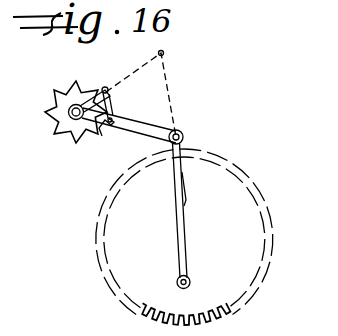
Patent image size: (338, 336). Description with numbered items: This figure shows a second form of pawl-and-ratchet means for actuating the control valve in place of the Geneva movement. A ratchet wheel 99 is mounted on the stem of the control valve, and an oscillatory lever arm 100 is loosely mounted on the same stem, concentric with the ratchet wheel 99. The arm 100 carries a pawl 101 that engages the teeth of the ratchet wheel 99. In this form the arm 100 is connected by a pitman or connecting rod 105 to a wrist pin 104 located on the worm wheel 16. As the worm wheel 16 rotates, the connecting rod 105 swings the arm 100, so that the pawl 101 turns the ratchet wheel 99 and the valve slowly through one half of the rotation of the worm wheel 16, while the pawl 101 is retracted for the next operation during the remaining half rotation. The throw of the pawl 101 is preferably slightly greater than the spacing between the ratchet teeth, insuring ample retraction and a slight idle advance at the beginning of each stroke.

The worm wheel 16 is at (184, 237).
The ratchet wheel 99 is at (57, 133).
The oscillatory lever arm 100 is at (137, 127).
The pawl 101 is at (102, 133).
The wrist pin 104 is at (190, 282).
The connecting rod 105 is at (178, 210).